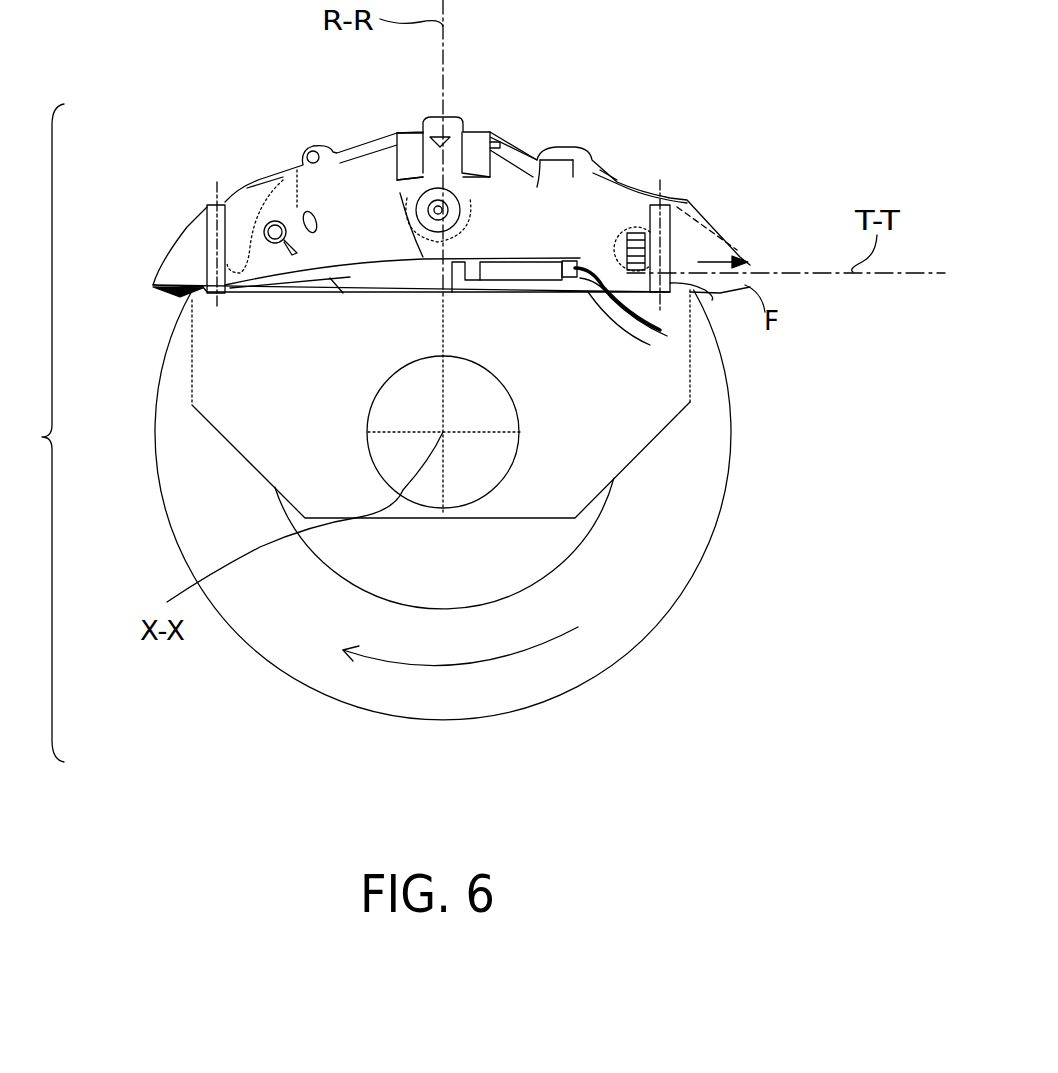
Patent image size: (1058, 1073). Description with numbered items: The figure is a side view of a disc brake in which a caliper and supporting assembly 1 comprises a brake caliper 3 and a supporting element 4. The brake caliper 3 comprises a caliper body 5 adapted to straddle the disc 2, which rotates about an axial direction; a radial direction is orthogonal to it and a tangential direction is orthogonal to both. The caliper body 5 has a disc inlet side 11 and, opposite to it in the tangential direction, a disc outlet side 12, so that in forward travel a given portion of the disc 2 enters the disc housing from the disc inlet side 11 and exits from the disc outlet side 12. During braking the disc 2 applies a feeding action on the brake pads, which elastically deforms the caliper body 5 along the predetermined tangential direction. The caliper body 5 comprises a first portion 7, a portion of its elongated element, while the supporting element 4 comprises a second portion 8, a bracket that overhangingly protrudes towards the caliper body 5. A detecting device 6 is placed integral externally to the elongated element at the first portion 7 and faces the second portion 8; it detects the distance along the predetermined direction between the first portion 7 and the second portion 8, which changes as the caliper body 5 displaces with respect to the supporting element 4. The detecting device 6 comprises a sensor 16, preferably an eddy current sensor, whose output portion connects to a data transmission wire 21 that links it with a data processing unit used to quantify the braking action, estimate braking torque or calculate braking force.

The caliper and supporting assembly 1 is at (39, 433).
The disc 2 is at (658, 570).
The brake caliper 3 is at (613, 222).
The supporting element 4 is at (590, 420).
The caliper body 5 is at (518, 210).
The detecting device 6 is at (553, 220).
The first portion 7 is at (605, 230).
The second portion 8 is at (397, 190).
The disc inlet side 11 is at (230, 262).
The disc outlet side 12 is at (712, 300).
The sensor 16 is at (565, 283).
The data transmission wire 21 is at (673, 337).